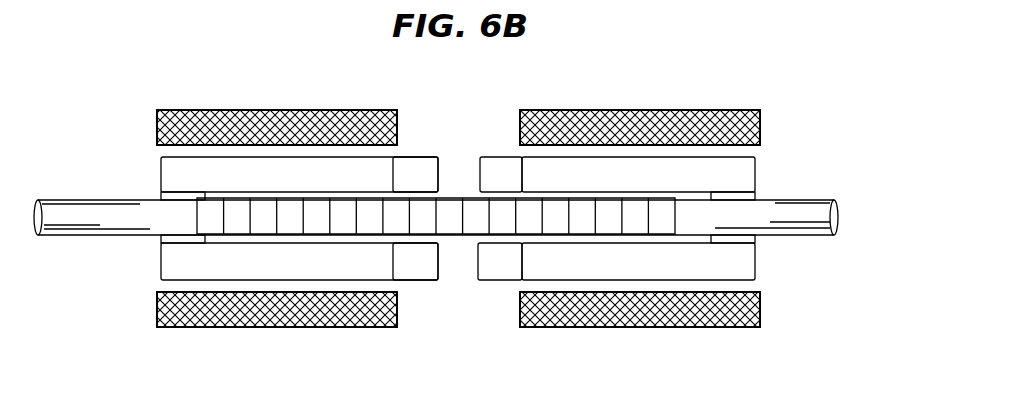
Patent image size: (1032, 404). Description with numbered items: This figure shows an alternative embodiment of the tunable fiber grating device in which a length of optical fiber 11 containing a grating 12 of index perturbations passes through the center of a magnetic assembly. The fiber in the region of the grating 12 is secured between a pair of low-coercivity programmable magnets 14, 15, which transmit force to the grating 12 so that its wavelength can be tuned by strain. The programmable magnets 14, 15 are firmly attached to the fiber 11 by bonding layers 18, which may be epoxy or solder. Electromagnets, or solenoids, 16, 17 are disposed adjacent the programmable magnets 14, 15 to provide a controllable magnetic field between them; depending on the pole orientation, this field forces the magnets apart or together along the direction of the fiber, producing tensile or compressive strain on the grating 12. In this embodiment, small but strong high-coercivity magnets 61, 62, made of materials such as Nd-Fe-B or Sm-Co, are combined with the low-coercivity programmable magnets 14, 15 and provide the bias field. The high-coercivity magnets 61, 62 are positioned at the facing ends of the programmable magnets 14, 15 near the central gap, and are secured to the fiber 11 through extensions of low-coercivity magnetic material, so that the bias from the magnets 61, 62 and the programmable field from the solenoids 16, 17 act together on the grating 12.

The optical fiber 11 is at (844, 218).
The grating 12 is at (447, 198).
The programmable magnet 14 is at (161, 174).
The programmable magnet 15 is at (755, 173).
The electromagnet (solenoid) 16 is at (219, 109).
The electromagnet (solenoid) 17 is at (688, 109).
The bonding layer 18 is at (160, 237).
The high-coercivity magnet 61 is at (417, 157).
The high-coercivity magnet 62 is at (500, 157).